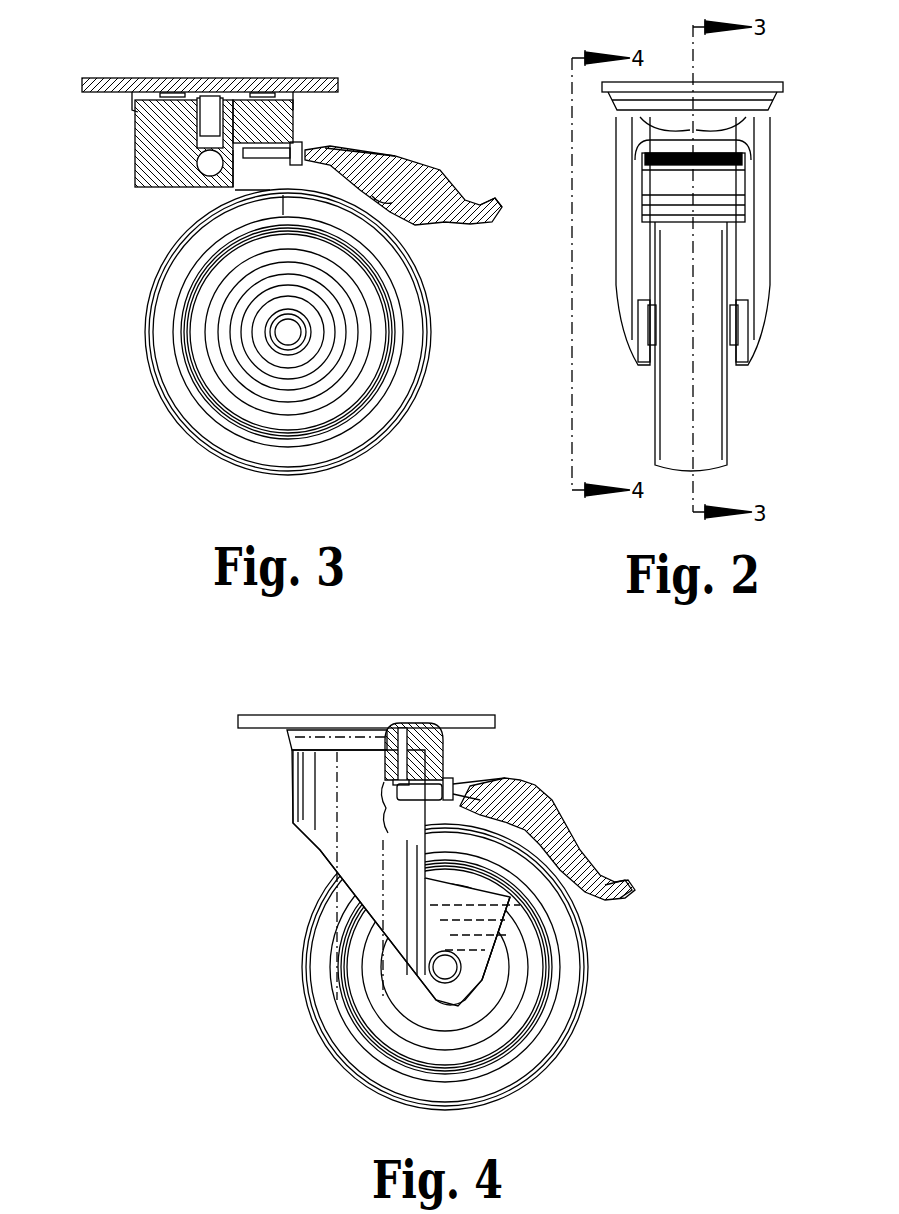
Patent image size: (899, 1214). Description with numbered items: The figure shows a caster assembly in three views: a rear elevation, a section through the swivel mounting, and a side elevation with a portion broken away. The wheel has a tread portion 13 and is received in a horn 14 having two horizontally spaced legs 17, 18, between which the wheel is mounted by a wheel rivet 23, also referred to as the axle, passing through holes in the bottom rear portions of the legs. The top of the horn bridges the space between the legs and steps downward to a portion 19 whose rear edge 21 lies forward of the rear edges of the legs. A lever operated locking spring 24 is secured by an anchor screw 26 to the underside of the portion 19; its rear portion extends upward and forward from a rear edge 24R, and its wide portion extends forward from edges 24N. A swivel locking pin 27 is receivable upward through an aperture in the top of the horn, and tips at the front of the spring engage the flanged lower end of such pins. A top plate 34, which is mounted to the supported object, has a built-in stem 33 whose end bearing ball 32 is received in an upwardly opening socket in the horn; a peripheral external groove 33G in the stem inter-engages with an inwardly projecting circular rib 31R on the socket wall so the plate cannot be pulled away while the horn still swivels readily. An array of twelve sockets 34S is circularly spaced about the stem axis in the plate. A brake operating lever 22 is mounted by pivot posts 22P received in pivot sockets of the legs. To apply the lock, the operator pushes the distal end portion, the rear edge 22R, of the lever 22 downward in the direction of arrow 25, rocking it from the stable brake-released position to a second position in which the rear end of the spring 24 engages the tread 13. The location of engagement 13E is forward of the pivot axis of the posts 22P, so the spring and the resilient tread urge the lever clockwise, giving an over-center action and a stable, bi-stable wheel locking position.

In FIG. 3, the tread portion 13 is at (365, 458).
In FIG. 2, the tread portion 13 is at (718, 450).
In FIG. 4, the tread portion 13 is at (585, 1012).
In FIG. 4, the location of engagement 13E is at (535, 930).
In FIG. 3, the horn 14 is at (78, 186).
In FIG. 4, the horn 14 is at (258, 795).
In FIG. 2, the leg 17 is at (622, 245).
In FIG. 2, the leg 18 is at (765, 240).
In FIG. 3, the portion 19 is at (300, 150).
In FIG. 4, the rear edge 21 is at (505, 795).
In FIG. 3, the brake operating lever 22 is at (472, 175).
In FIG. 2, the brake operating lever 22 is at (728, 186).
In FIG. 4, the pivot posts 22P is at (555, 800).
In FIG. 3, the rear edge 22R is at (500, 203).
In FIG. 4, the rear edge 22R is at (628, 886).
In FIG. 3, the wheel rivet 23 is at (296, 336).
In FIG. 2, the wheel rivet 23 is at (748, 328).
In FIG. 4, the wheel rivet 23 is at (440, 968).
In FIG. 3, the locking spring 24 is at (405, 160).
In FIG. 3, the edges 24N is at (330, 162).
In FIG. 3, the rear edge 24R is at (380, 205).
In FIG. 3, the arrow 25 is at (520, 195).
In FIG. 3, the anchor screw 26 is at (283, 222).
In FIG. 4, the anchor screw 26 is at (440, 790).
In FIG. 3, the swivel locking pin 27 is at (228, 195).
In FIG. 4, the swivel locking pin 27 is at (398, 760).
In FIG. 3, the circular rib 31R is at (212, 130).
In FIG. 3, the bearing ball 32 is at (205, 162).
In FIG. 3, the stem 33 is at (185, 78).
In FIG. 3, the peripheral external groove 33G is at (200, 135).
In FIG. 3, the top plate 34 is at (300, 80).
In FIG. 2, the top plate 34 is at (730, 86).
In FIG. 4, the top plate 34 is at (272, 704).
In FIG. 3, the sockets 34S is at (258, 100).